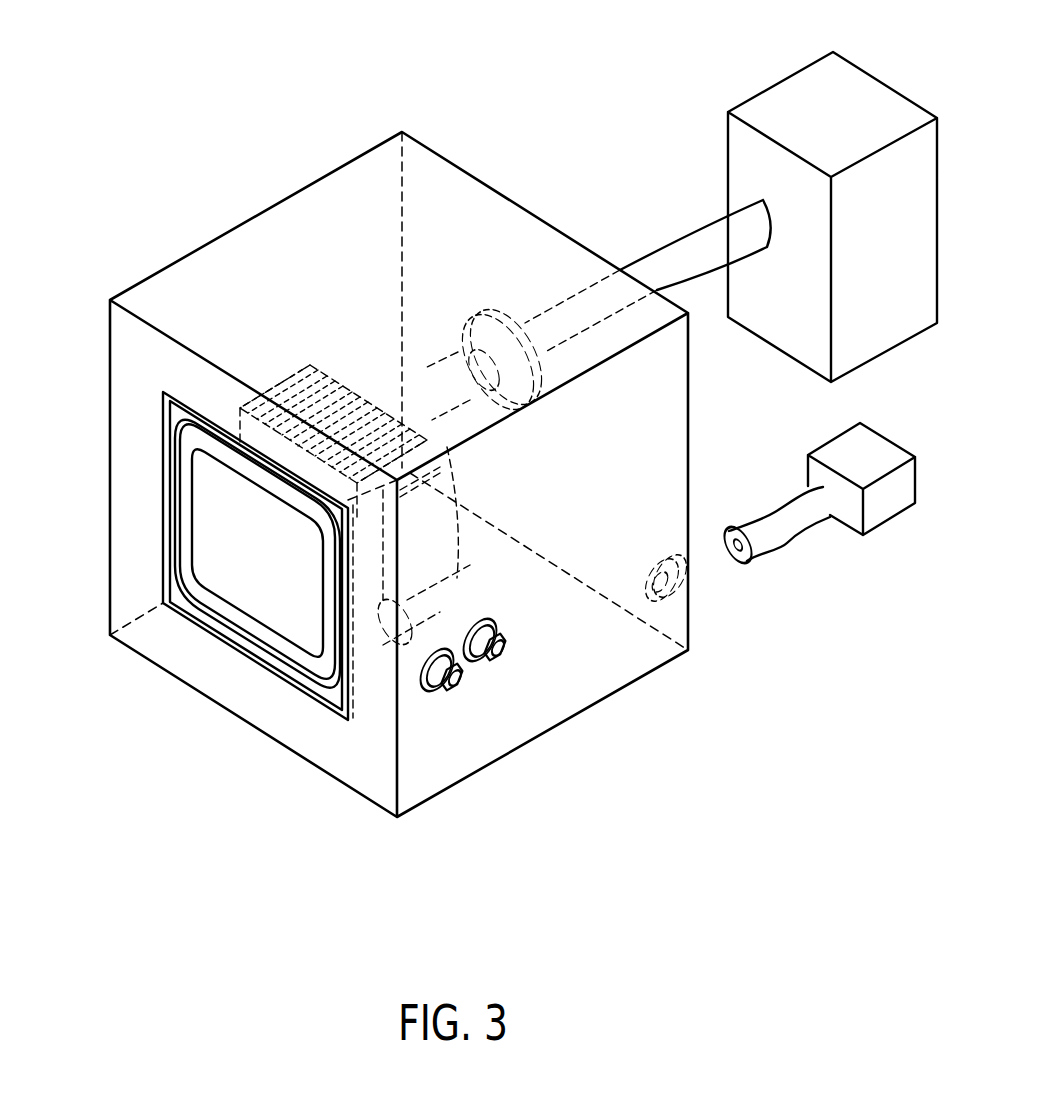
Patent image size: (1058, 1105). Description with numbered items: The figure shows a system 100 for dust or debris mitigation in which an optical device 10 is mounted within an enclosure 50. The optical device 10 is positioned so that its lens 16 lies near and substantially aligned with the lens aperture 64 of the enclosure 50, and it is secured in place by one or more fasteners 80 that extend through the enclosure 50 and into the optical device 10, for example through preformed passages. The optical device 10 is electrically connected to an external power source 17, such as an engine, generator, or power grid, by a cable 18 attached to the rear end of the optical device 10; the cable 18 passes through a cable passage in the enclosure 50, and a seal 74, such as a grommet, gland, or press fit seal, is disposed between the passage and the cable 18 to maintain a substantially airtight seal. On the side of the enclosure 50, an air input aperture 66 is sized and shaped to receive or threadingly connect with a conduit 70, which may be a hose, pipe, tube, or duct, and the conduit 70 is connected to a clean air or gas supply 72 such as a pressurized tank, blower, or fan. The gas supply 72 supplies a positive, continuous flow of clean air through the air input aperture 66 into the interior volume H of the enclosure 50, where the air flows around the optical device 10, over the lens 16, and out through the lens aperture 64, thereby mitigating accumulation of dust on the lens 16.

The system for dust or debris mitigation 100 is at (244, 97).
The enclosure 50 is at (238, 225).
The lens aperture 64 is at (170, 512).
The optical device 10 is at (202, 437).
The lens 16 is at (238, 588).
The seal 74 is at (483, 337).
The power source 17 is at (705, 242).
The cable 18 is at (815, 88).
The conduit 70 is at (777, 527).
The gas supply 72 is at (888, 507).
The air input aperture 66 is at (722, 580).
The fasteners 80 is at (502, 663).
The interior volume H is at (552, 655).